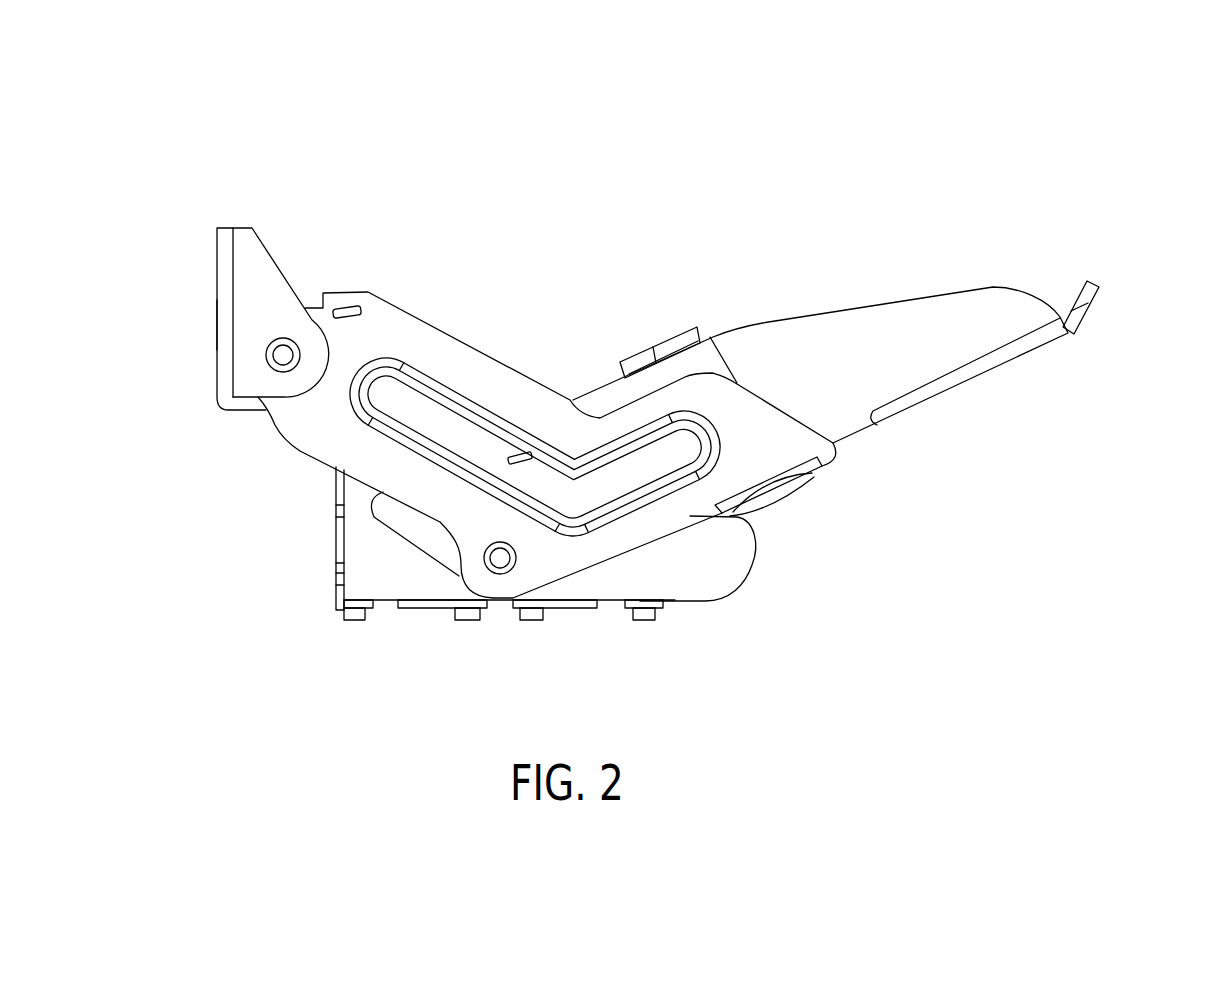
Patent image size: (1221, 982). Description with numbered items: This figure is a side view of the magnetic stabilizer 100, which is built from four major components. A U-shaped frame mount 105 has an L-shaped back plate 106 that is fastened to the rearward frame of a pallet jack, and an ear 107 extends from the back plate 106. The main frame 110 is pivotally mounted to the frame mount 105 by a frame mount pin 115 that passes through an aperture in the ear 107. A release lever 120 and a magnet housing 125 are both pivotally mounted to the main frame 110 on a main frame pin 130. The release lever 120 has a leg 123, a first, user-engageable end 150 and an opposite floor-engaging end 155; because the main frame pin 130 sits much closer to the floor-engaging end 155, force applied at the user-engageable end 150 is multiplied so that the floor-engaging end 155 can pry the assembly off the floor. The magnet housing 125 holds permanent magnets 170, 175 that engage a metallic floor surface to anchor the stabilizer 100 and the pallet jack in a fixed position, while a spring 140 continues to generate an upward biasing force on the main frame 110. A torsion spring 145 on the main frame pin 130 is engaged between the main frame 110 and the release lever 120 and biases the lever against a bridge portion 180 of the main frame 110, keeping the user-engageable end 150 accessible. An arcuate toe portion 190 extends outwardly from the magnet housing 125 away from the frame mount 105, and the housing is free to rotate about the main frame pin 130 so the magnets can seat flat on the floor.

The magnetic stabilizer 100 is at (973, 145).
The U-shaped frame mount 105 is at (215, 270).
The L-shaped back plate 106 is at (213, 328).
The ear 107 is at (253, 234).
The main frame 110 is at (473, 347).
The frame mount pin 115 is at (283, 355).
The release lever 120 is at (1003, 308).
The leg 123 is at (593, 405).
The magnet housing 125 is at (420, 583).
The main frame pin 130 is at (500, 558).
The spring 140 is at (347, 310).
The torsion spring 145 is at (520, 453).
The user-engageable end 150 is at (1087, 303).
The floor-engaging end 155 is at (387, 521).
The permanent magnet 170 is at (352, 620).
The permanent magnet 175 is at (532, 620).
The bridge portion 180 is at (798, 495).
The arcuate toe portion 190 is at (697, 558).